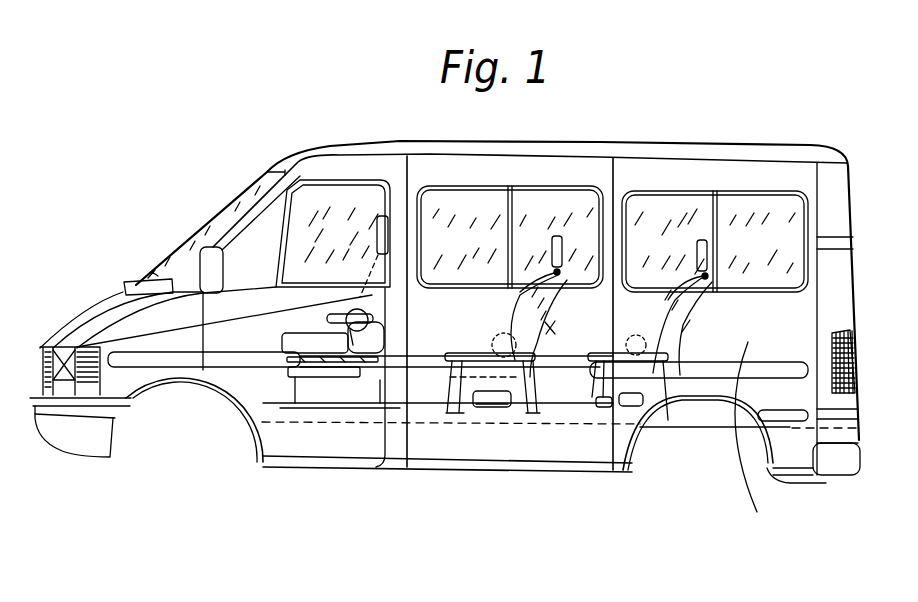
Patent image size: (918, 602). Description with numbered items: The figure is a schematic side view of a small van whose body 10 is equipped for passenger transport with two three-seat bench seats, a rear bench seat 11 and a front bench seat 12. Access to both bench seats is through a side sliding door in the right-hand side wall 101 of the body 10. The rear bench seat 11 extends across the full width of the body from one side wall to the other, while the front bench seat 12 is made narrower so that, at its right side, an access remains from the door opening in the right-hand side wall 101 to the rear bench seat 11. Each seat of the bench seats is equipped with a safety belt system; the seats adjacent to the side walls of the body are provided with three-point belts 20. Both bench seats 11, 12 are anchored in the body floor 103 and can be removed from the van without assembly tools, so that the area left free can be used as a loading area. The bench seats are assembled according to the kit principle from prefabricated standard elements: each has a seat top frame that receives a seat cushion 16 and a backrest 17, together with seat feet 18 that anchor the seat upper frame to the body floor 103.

The small van body 10 is at (823, 183).
The rear bench seat 11 is at (621, 424).
The front bench seat 12 is at (498, 424).
The seat cushion 16 is at (470, 408).
The backrest 17 is at (567, 362).
The seat feet 18 is at (539, 377).
The three-point belt 20 is at (510, 312).
The right-hand side wall 101 is at (751, 448).
The body floor 103 is at (824, 422).